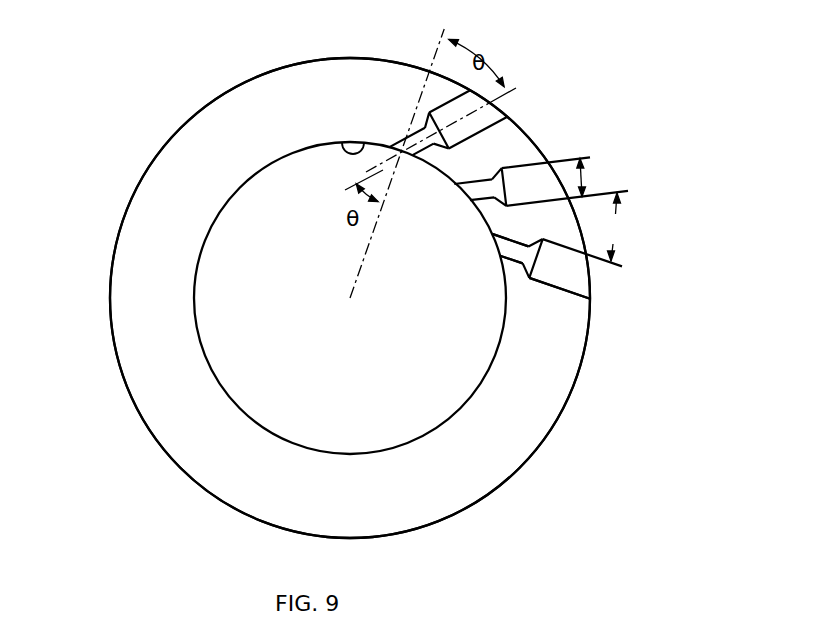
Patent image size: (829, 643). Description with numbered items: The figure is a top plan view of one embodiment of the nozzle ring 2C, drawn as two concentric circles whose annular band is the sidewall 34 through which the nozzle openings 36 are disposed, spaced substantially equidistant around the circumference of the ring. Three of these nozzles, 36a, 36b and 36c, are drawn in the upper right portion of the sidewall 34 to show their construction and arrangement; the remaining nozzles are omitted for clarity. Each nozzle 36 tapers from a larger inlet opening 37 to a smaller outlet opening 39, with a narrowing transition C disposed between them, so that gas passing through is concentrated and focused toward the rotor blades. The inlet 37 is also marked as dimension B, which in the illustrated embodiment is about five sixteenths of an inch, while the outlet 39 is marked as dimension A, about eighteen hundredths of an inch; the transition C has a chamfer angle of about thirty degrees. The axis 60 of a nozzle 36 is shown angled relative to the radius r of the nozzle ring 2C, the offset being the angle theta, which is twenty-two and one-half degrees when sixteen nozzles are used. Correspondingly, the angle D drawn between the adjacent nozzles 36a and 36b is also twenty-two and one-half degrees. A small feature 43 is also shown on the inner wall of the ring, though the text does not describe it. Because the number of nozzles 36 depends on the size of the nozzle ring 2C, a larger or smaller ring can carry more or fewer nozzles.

The nozzle ring 2C is at (140, 233).
The sidewall 34 is at (583, 355).
The nozzle openings 36 is at (552, 167).
The nozzle 36a is at (573, 282).
The nozzle 36b is at (537, 175).
The nozzle 36c is at (485, 117).
The inlet opening 37 is at (583, 302).
The outlet opening 39 is at (498, 258).
The notch 43 is at (340, 147).
The axis 60 is at (343, 172).
The outlet diameter A is at (452, 180).
The inlet diameter B is at (590, 178).
The narrowing transition C is at (511, 165).
The angle between adjacent nozzles D is at (618, 227).
The radius r is at (427, 111).